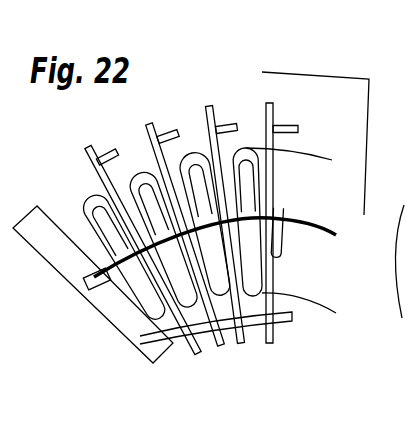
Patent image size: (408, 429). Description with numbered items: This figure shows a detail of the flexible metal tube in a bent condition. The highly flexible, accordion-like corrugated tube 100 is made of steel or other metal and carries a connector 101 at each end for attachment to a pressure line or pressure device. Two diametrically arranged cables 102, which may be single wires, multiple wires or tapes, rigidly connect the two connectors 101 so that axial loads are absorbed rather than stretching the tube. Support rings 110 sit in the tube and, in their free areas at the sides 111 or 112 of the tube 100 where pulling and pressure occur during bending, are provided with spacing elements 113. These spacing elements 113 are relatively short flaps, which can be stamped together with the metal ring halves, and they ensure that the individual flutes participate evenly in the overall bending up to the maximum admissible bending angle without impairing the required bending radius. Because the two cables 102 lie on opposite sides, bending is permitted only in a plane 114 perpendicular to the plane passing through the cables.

The corrugated tube 100 is at (247, 195).
The connector 101 is at (140, 326).
The cable 102 is at (301, 228).
The support ring 110 is at (152, 163).
The side of tube 111 is at (217, 107).
The side of tube 112 is at (317, 311).
The spacing element 113 is at (171, 133).
The bending plane 114 is at (306, 108).